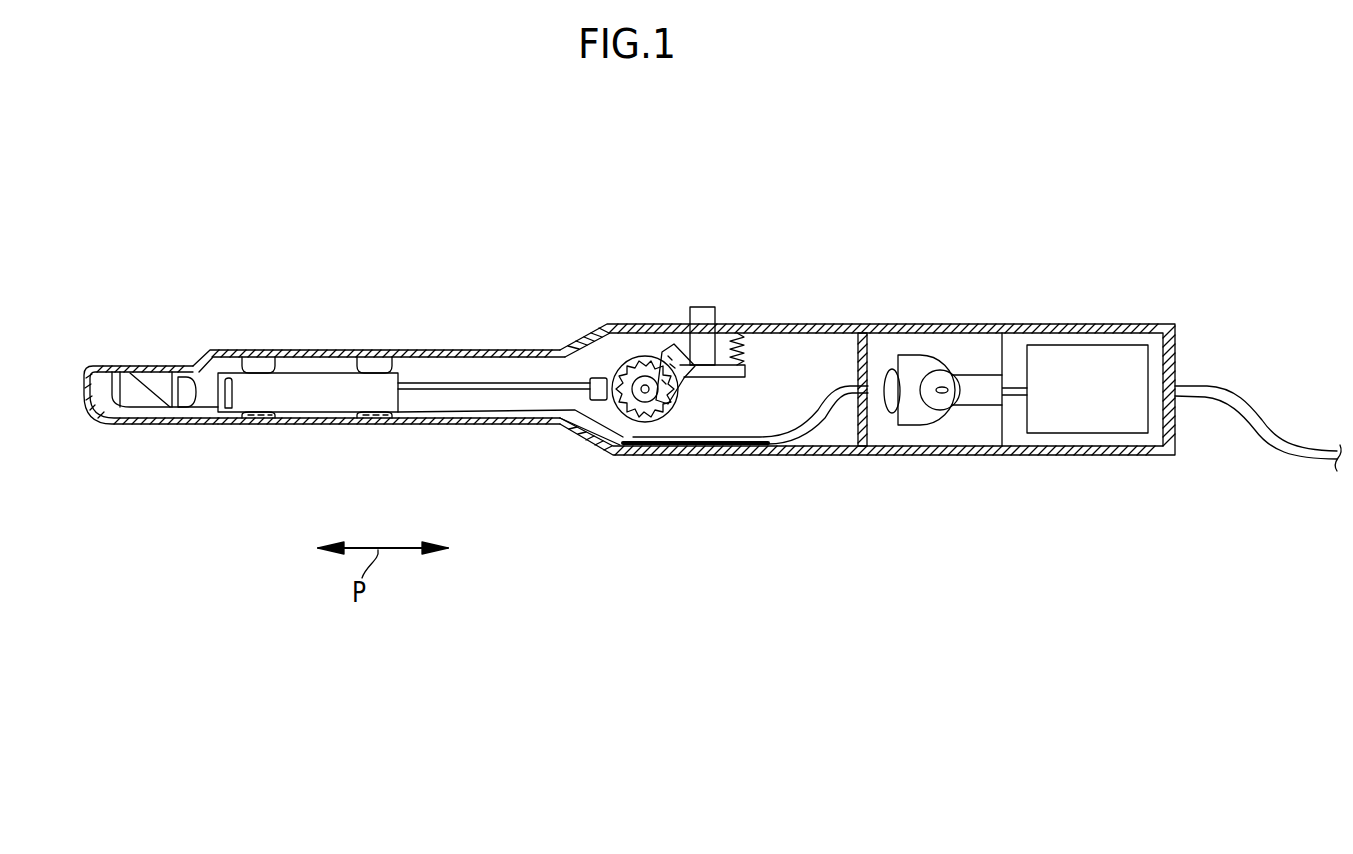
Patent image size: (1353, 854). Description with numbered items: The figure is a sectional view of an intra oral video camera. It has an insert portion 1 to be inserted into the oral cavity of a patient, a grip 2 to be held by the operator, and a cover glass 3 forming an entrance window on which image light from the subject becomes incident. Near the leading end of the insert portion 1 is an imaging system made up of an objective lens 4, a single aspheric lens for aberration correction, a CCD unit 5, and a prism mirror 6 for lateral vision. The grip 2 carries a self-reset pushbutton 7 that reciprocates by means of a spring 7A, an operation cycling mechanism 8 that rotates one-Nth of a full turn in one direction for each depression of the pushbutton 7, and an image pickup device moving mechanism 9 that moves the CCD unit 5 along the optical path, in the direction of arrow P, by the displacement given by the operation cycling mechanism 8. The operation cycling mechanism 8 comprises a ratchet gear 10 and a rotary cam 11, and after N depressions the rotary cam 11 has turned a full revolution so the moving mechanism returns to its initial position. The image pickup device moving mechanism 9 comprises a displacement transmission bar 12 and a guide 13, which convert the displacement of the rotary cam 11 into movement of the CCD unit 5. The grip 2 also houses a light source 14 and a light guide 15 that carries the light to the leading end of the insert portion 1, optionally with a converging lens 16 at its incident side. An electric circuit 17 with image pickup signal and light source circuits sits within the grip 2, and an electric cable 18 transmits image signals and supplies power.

The insert portion 1 is at (250, 351).
The grip 2 is at (823, 325).
The cover glass 3 is at (126, 364).
The objective lens 4 is at (190, 408).
The CCD unit 5 is at (236, 412).
The prism mirror 6 is at (158, 388).
The pushbutton 7 is at (706, 307).
The spring 7A is at (752, 328).
The operation cycling mechanism 8 is at (645, 358).
The image pickup device moving mechanism 9 is at (323, 394).
The ratchet gear 10 is at (632, 427).
The rotary cam 11 is at (682, 405).
The displacement transmission bar 12 is at (483, 394).
The guide 13 is at (372, 362).
The light source 14 is at (944, 358).
The light guide 15 is at (800, 444).
The converging lens 16 is at (889, 420).
The electric circuit 17 is at (1108, 355).
The electric cable 18 is at (1244, 400).